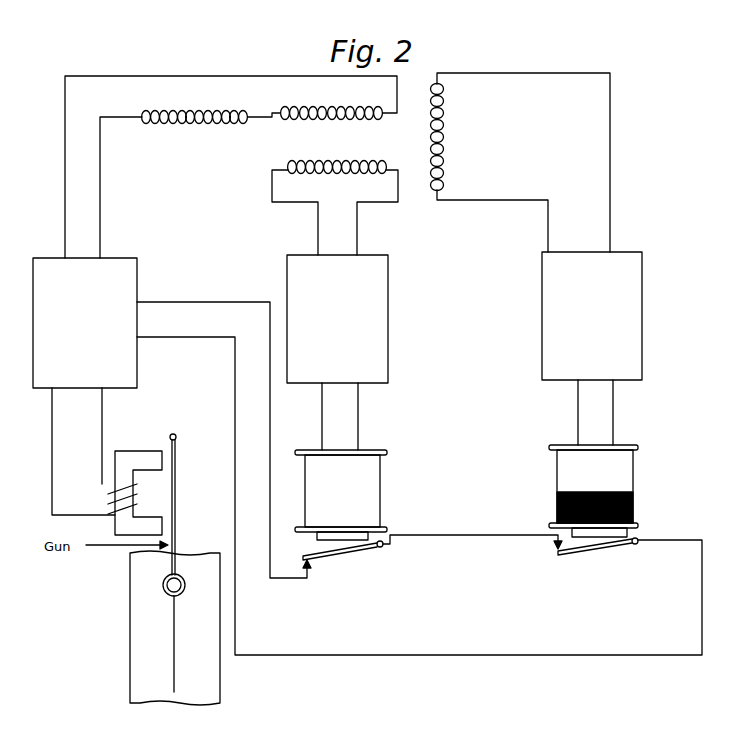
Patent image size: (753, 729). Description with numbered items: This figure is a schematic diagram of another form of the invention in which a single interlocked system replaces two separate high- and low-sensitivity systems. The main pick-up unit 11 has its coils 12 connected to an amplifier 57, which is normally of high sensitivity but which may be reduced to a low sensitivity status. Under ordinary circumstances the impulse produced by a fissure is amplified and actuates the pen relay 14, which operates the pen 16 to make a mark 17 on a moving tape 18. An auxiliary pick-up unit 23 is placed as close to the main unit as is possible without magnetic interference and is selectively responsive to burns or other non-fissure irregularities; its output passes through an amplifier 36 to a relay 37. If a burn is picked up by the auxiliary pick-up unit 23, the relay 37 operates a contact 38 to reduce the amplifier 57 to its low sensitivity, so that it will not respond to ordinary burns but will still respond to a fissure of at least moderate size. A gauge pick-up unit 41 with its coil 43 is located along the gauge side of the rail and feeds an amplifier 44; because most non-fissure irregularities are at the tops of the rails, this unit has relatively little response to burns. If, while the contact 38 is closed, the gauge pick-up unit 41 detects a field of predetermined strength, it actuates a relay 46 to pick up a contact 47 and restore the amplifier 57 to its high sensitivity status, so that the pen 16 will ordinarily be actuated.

The main pick-up unit 11 is at (273, 121).
The coils 12 is at (217, 111).
The pen relay 14 is at (128, 456).
The pen 16 is at (163, 587).
The mark 17 is at (172, 637).
The moving tape 18 is at (130, 657).
The auxiliary pick-up unit 23 is at (452, 140).
The amplifier 36 is at (630, 277).
The relay 37 is at (628, 470).
The contact 38 is at (573, 556).
The gauge pick-up unit 41 is at (330, 178).
The coil 43 is at (343, 171).
The amplifier 44 is at (388, 282).
The relay 46 is at (372, 477).
The contact 47 is at (334, 559).
The amplifier 57 is at (127, 272).